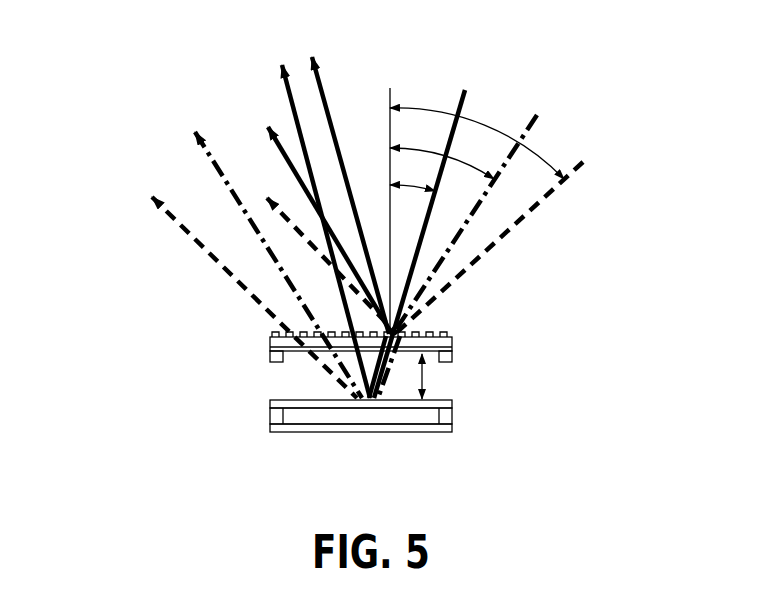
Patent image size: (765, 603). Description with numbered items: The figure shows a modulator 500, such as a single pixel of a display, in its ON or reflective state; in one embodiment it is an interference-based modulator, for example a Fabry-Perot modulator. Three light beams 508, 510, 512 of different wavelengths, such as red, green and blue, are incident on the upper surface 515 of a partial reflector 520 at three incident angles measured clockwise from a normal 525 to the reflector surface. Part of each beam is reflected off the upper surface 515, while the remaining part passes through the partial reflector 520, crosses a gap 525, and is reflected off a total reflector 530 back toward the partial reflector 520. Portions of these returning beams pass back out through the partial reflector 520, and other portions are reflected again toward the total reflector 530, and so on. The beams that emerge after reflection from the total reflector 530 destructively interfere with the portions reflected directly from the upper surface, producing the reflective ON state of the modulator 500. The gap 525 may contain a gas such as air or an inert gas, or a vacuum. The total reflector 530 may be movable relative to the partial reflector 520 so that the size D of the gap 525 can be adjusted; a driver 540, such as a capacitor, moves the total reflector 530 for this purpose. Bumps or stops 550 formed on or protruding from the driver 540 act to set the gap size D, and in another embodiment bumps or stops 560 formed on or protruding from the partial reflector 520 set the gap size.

The modulator 500 is at (541, 295).
The light beam 508 is at (588, 165).
The light beam 510 is at (540, 116).
The light beam 512 is at (463, 90).
The upper surface 515 is at (297, 328).
The partial reflector 520 is at (313, 284).
The gap 525 is at (390, 95).
The total reflector 530 is at (452, 405).
The driver 540 is at (452, 428).
The bumps (or stops) 550 is at (452, 415).
The bumps (or stops) 560 is at (452, 355).
The gap size D is at (430, 372).